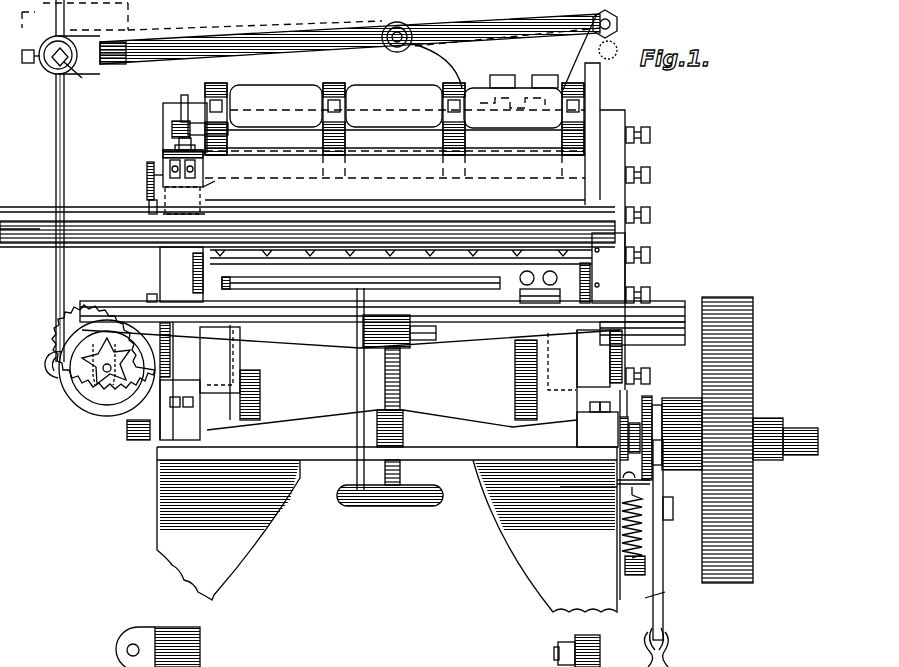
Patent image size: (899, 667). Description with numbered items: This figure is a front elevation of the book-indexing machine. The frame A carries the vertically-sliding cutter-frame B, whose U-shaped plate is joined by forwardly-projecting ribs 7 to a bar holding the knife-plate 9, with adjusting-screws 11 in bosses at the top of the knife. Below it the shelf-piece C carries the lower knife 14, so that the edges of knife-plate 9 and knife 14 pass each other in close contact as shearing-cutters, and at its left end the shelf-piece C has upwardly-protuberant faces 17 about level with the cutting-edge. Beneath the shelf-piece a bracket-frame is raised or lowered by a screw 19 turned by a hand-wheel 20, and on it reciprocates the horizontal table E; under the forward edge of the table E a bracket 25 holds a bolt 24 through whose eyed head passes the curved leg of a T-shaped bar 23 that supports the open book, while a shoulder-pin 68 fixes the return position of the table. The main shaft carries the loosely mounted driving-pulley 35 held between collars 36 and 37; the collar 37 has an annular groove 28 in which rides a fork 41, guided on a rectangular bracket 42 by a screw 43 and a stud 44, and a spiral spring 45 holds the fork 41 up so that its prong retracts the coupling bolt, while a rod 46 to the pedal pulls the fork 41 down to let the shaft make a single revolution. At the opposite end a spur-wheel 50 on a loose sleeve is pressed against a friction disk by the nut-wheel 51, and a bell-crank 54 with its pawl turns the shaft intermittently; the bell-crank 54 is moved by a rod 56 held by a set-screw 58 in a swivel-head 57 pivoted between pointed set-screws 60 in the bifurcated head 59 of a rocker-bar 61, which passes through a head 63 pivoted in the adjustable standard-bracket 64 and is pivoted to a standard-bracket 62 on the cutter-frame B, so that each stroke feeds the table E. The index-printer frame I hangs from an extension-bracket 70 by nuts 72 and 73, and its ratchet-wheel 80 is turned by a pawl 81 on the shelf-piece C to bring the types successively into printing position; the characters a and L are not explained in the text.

The swivel-head 57 is at (56, 30).
The set-screw 58 is at (27, 68).
The bifurcated head 59 is at (69, 55).
The pointed set-screws 60 is at (82, 75).
The rod 56 is at (60, 168).
The upwardly-protuberant faces 17 is at (20, 206).
The shelf-piece C is at (88, 225).
The nut 73 is at (180, 106).
The extension-bracket 70 is at (172, 128).
The nut 72 is at (178, 144).
The index-printer frame I is at (165, 155).
The ratchet-wheel 80 is at (144, 181).
The pawl 81 is at (149, 200).
The forwardly-projecting ribs 7 is at (222, 92).
The adjusting-screws 11 is at (280, 108).
The cutter-frame B is at (394, 106).
The rocker-bar 61 is at (495, 20).
The head 63 is at (392, 50).
The standard-bracket 64 is at (435, 62).
The standard-bracket 62 is at (612, 62).
The knife-plate 9 is at (395, 165).
The lower knife 14 is at (372, 222).
The frame A is at (602, 206).
The table E is at (382, 314).
The shoulder-pin 68 is at (152, 294).
The bolt 24 is at (360, 335).
The T-shaped bar 23 is at (356, 375).
The bracket 25 is at (410, 345).
The screw 19 is at (400, 383).
The driving-pulley 35 is at (753, 345).
The annular groove 28 is at (650, 410).
The collar 37 is at (685, 408).
The collar 36 is at (768, 452).
The shaft a is at (800, 455).
The hand-wheel 20 is at (390, 507).
The spiral spring 45 is at (622, 548).
The stud 44 is at (624, 570).
The screw 43 is at (672, 512).
The fork 41 is at (665, 545).
The rectangular bracket 42 is at (644, 596).
The rod 46 is at (662, 647).
The bell-crank 54 is at (52, 370).
The nut-wheel 51 is at (93, 375).
The spur-wheel 50 is at (95, 410).
The lever L is at (209, 185).